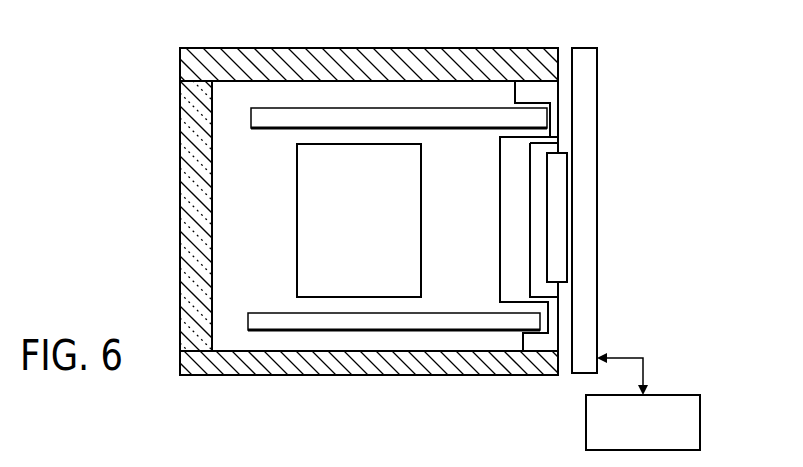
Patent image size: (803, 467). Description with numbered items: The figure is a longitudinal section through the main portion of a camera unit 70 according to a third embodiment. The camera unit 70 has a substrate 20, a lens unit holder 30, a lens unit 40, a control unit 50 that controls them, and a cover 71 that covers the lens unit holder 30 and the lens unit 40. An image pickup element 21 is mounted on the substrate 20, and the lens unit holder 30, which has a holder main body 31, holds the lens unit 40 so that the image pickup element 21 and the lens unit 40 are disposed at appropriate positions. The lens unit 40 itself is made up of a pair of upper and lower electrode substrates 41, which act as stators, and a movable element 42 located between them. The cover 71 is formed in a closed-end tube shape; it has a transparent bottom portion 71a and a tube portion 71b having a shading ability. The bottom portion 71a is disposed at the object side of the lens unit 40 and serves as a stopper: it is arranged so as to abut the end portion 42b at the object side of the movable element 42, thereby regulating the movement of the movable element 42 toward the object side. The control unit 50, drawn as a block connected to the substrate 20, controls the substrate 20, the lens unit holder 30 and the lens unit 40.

The substrate 20 is at (622, 28).
The image pickup element 21 is at (555, 256).
The lens unit holder 30 is at (500, 250).
The holder main body 31 is at (517, 163).
The lens unit 40 is at (248, 323).
The electrode substrates (stators) 41 is at (445, 129).
The movable element 42 is at (358, 144).
The end portion at the object side of the movable element 42b is at (297, 192).
The control unit 50 is at (586, 413).
The camera unit 70 is at (628, 197).
The cover 71 is at (268, 48).
The bottom portion 71a is at (214, 243).
The tube portion 71b is at (343, 57).